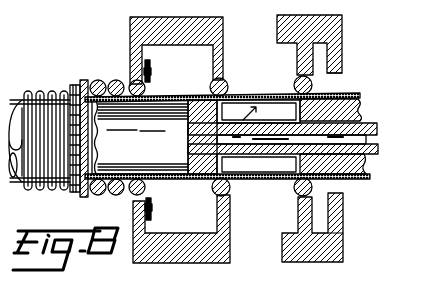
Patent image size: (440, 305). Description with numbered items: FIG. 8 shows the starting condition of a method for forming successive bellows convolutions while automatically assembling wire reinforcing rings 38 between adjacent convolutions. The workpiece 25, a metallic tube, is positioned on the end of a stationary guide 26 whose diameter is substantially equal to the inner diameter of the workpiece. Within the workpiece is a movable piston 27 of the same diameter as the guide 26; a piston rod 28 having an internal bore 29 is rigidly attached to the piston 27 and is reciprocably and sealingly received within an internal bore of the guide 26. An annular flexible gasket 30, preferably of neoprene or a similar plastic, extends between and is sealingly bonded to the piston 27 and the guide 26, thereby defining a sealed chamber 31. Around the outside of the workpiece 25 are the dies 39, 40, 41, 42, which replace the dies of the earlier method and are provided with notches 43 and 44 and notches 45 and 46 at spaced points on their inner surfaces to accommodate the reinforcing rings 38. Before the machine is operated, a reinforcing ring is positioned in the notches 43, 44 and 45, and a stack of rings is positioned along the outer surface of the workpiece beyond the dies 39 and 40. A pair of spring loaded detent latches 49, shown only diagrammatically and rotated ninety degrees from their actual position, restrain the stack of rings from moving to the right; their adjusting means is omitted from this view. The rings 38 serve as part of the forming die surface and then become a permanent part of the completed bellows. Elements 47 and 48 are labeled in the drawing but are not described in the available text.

The workpiece 25 is at (350, 96).
The stationary guide 26 is at (360, 104).
The movable piston 27 is at (190, 132).
The piston rod 28 is at (372, 121).
The internal bore 29 is at (377, 135).
The annular flexible gasket 30 is at (277, 90).
The sealed chamber 31 is at (188, 160).
The reinforcing rings 38 is at (103, 82).
The die 39 is at (130, 32).
The die 40 is at (133, 258).
The die 41 is at (344, 22).
The die 42 is at (345, 240).
The notch 43 is at (127, 80).
The notch 44 is at (210, 81).
The notch 45 is at (297, 73).
The notch 46 is at (333, 78).
The nut flange 47 is at (60, 191).
The threaded connector 48 is at (23, 90).
The spring loaded detent latches 49 is at (151, 72).